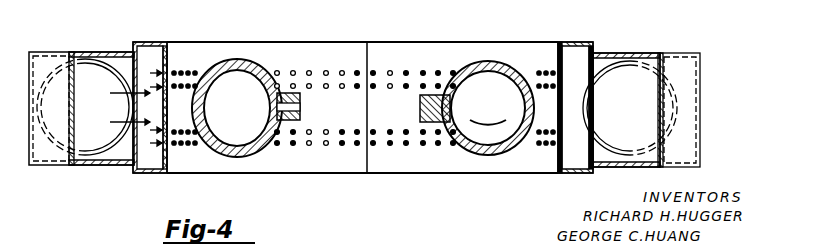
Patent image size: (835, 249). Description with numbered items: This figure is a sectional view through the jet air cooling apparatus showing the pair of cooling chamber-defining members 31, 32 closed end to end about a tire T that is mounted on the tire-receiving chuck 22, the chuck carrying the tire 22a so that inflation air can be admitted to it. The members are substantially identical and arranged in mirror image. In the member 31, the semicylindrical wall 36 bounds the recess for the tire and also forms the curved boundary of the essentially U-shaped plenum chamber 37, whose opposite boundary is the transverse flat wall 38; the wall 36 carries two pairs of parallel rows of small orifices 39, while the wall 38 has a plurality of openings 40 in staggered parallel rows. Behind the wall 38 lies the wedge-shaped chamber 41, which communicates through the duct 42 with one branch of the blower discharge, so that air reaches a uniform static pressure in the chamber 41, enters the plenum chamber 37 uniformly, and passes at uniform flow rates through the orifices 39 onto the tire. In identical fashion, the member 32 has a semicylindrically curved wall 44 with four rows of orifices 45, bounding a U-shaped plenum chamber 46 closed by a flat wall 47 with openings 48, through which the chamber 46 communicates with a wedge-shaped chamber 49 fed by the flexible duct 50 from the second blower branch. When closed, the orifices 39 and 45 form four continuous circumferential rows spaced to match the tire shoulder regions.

The cooling chamber-defining member 31 is at (257, 42).
The cooling chamber-defining member 32 is at (497, 42).
The semicylindrical wall 36 is at (170, 62).
The plenum chamber 37 is at (153, 52).
The transverse flat wall 38 is at (133, 72).
The orifices 39 is at (342, 73).
The openings 40 is at (147, 137).
The chamber 41 is at (110, 153).
The duct 42 is at (88, 147).
The semicylindrically curved wall 44 is at (558, 58).
The orifices 45 is at (423, 73).
The plenum chamber 46 is at (570, 55).
The flat wall 47 is at (588, 163).
The openings 48 is at (583, 62).
The wedge-shaped chamber 49 is at (607, 70).
The flexible duct 50 is at (632, 152).
The tire-receiving chuck 22 is at (428, 122).
The tire 22a is at (295, 120).
The tire T is at (497, 157).